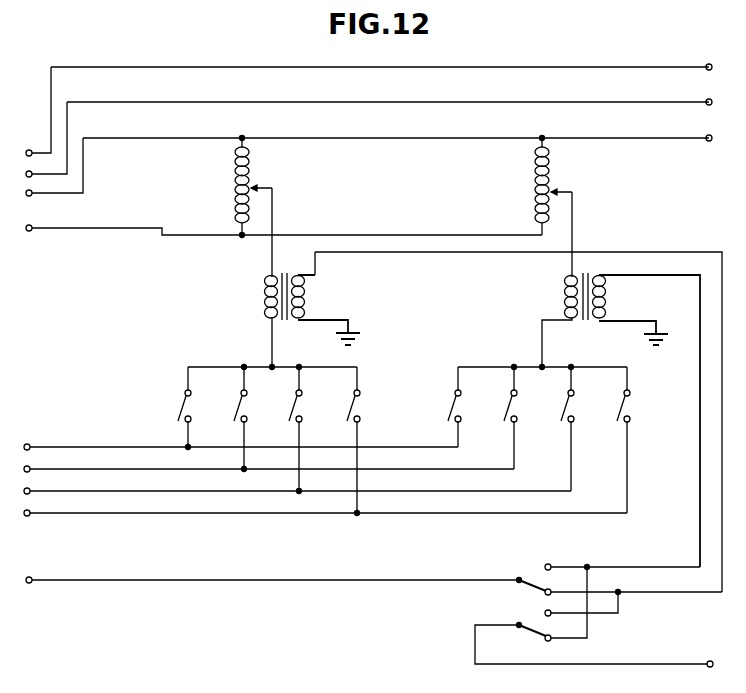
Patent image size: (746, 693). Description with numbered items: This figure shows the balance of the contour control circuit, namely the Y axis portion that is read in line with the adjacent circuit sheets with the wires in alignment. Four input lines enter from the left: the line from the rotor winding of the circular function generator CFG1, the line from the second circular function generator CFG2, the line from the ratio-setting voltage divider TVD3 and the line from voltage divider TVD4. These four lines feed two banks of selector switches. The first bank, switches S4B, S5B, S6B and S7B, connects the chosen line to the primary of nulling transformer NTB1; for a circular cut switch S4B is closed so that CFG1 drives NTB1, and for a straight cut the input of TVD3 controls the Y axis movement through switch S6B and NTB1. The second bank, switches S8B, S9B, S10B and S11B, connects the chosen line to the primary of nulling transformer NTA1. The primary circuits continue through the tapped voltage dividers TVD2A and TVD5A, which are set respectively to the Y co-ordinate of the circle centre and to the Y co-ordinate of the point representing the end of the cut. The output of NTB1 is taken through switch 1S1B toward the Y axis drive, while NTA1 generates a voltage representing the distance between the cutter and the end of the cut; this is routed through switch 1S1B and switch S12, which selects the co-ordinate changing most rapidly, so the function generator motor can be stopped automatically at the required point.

The tapped voltage divider TVD2A is at (273, 206).
The tapped voltage divider TVD5A is at (573, 206).
The nulling transformer NTB1 is at (313, 320).
The nulling transformer NTA1 is at (621, 420).
The switch S4B is at (167, 407).
The switch S5B is at (228, 418).
The switch S6B is at (284, 429).
The switch S7B is at (341, 440).
The switch S8B is at (439, 407).
The switch S9B is at (498, 418).
The switch S10B is at (553, 429).
The switch S11B is at (608, 440).
The circular function generator CFG1 is at (241, 438).
The circular function generator CFG2 is at (269, 460).
The tapped voltage divider TVD3 is at (297, 482).
The tapped voltage divider TVD4 is at (325, 504).
The switch S12 is at (286, 577).
The switch 1S1B is at (598, 615).